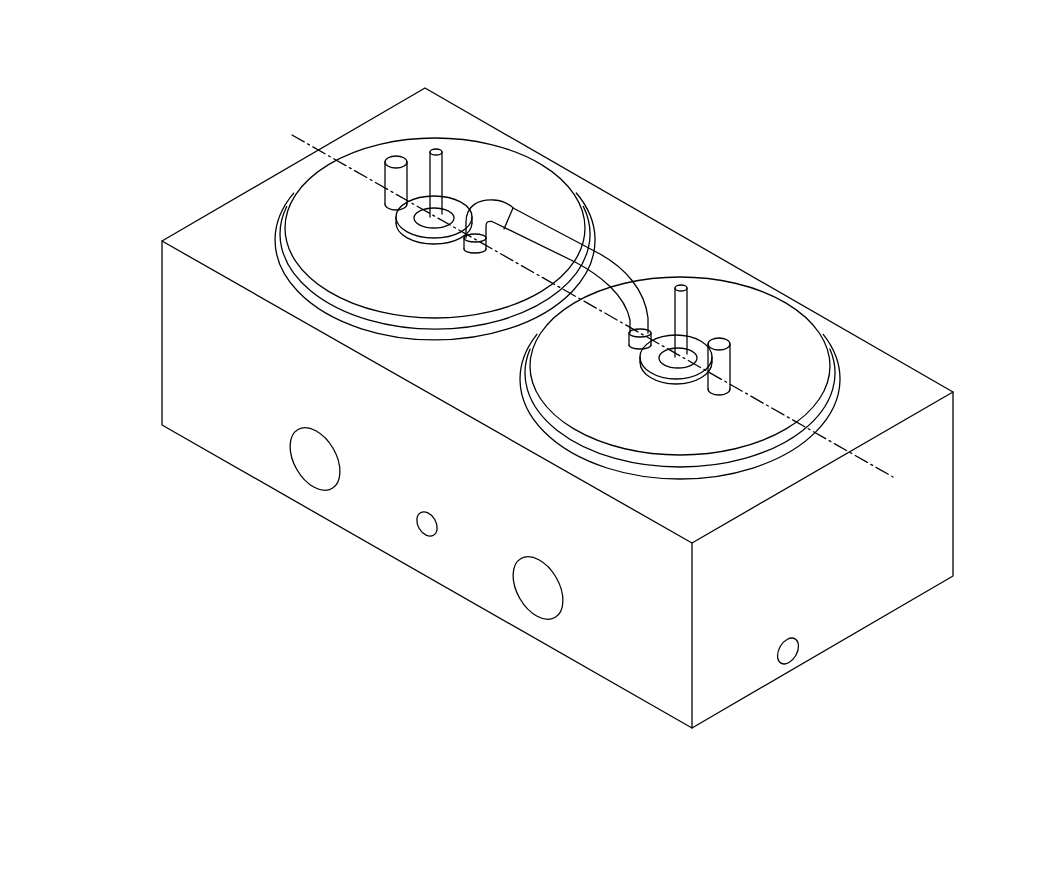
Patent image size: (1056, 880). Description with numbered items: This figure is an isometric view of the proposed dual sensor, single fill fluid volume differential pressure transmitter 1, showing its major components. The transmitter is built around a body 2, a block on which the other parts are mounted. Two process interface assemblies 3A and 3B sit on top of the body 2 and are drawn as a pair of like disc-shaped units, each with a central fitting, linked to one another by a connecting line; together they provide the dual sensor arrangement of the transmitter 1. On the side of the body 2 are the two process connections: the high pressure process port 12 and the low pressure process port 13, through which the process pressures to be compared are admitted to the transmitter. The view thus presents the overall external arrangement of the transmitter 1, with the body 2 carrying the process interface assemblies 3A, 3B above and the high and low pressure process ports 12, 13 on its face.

The differential pressure transmitter 1 is at (224, 117).
The body 2 is at (292, 135).
The process interface assembly 3A is at (330, 220).
The process interface assembly 3B is at (787, 363).
The high pressure process port 12 is at (293, 468).
The low pressure process port 13 is at (513, 590).